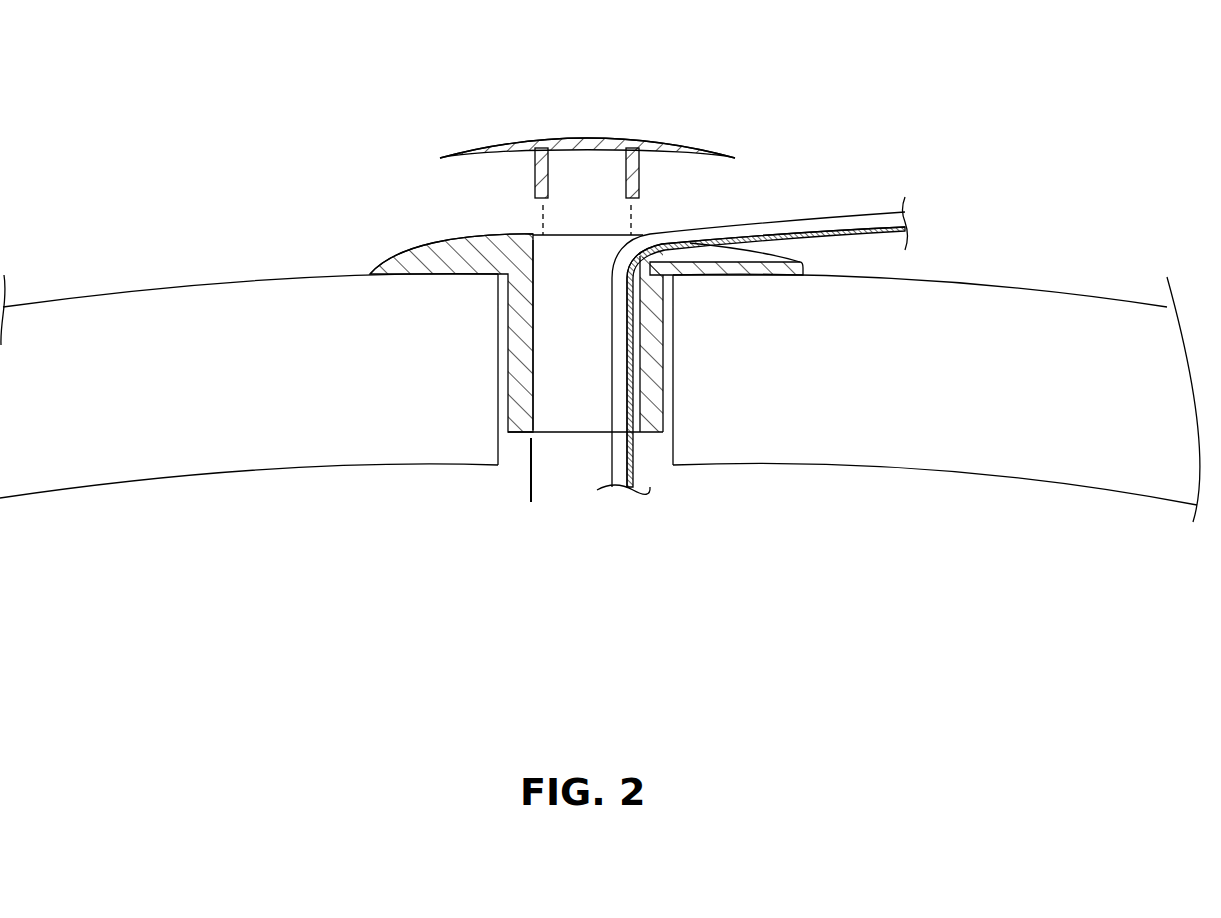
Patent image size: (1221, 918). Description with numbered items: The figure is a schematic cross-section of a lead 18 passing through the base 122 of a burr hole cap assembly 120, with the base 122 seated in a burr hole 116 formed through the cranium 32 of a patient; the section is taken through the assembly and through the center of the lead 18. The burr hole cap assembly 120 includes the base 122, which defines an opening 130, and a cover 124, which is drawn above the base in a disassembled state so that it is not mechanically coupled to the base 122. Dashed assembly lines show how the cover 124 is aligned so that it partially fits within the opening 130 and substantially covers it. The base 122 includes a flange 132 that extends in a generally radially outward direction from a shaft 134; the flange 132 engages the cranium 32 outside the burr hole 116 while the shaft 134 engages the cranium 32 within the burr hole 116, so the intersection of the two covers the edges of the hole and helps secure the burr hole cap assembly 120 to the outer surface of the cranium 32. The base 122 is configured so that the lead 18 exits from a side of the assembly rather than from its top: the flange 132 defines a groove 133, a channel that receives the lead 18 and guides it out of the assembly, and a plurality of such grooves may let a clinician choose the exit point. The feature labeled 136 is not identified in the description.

The lead 18 is at (787, 214).
The cranium 32 is at (240, 395).
The burr hole 116 is at (494, 418).
The burr hole cap assembly 120 is at (738, 146).
The base 122 is at (658, 377).
The cover 124 is at (568, 140).
The opening 130 is at (553, 318).
The flange 132 is at (417, 254).
The groove 133 is at (705, 265).
The shaft 134 is at (653, 413).
The liner 136 is at (843, 232).